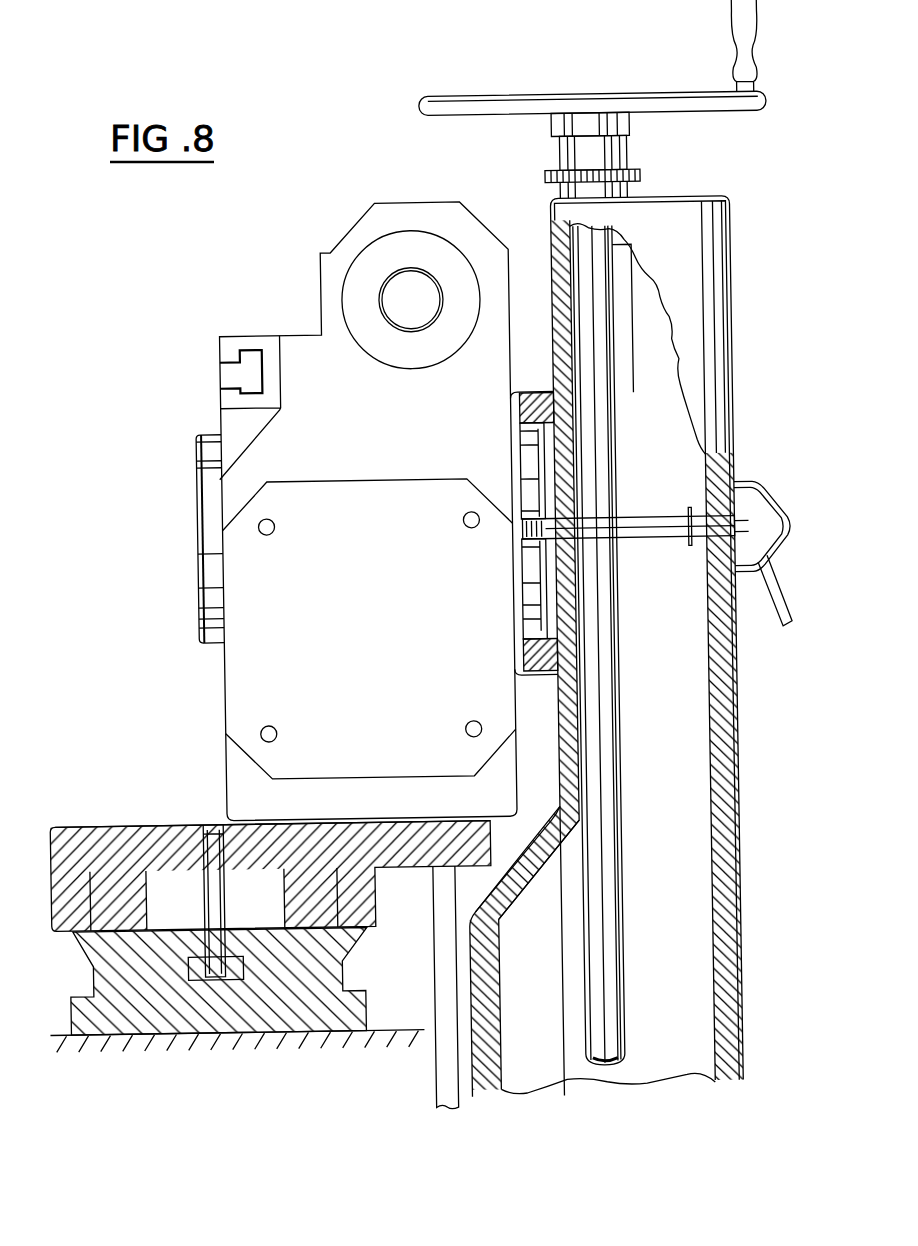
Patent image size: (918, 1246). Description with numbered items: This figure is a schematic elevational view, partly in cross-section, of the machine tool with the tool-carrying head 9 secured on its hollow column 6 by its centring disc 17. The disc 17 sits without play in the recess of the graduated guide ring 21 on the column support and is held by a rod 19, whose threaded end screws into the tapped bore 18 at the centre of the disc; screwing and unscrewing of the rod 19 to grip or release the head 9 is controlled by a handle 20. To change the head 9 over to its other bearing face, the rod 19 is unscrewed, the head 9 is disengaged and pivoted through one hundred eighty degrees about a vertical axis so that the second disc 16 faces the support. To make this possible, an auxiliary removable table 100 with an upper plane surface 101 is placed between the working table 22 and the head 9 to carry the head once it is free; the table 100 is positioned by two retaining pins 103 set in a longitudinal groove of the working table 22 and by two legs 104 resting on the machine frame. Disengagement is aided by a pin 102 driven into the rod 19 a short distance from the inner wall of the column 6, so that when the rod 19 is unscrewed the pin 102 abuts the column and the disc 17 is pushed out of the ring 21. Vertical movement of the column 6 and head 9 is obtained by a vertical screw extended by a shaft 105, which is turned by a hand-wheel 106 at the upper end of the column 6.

The column 6 is at (715, 399).
The tool-carrying head 9 is at (314, 370).
The centring disc 16 is at (200, 488).
The centring disc 17 is at (525, 508).
The tapped bore 18 is at (524, 578).
The rod 19 is at (667, 542).
The handle 20 is at (775, 598).
The graduated guide ring 21 is at (532, 392).
The working table 22 is at (340, 1008).
The auxiliary removable table 100 is at (92, 840).
The upper plane surface 101 is at (152, 809).
The pin 102 is at (691, 518).
The retaining pins 103 is at (206, 902).
The legs 104 is at (440, 978).
The shaft 105 is at (606, 1001).
The hand-wheel 106 is at (496, 98).